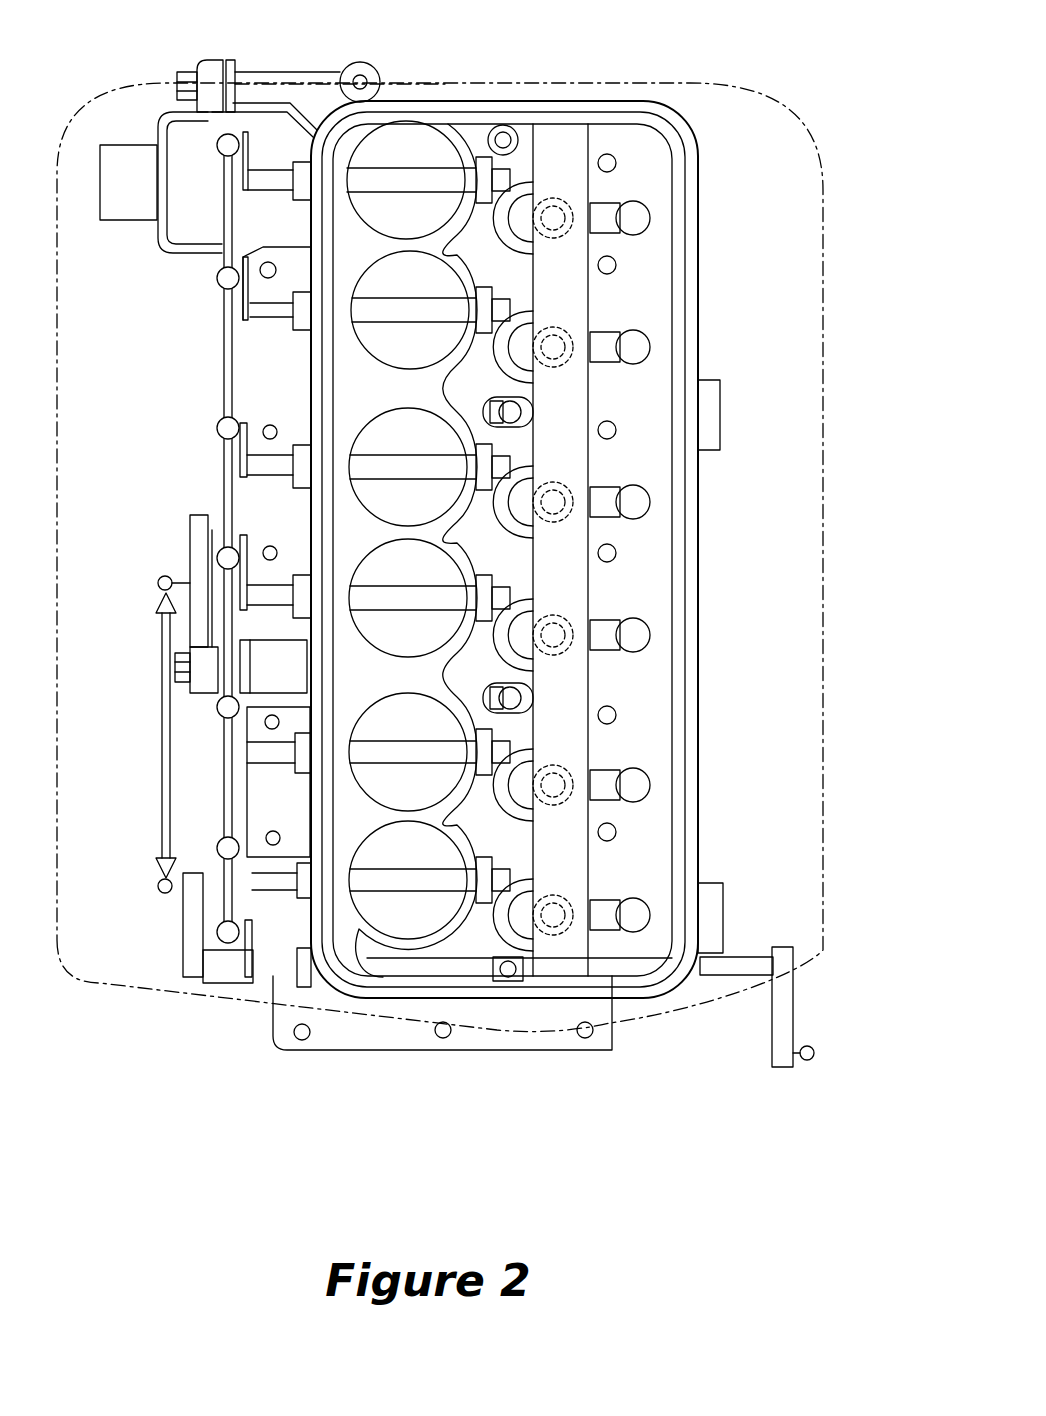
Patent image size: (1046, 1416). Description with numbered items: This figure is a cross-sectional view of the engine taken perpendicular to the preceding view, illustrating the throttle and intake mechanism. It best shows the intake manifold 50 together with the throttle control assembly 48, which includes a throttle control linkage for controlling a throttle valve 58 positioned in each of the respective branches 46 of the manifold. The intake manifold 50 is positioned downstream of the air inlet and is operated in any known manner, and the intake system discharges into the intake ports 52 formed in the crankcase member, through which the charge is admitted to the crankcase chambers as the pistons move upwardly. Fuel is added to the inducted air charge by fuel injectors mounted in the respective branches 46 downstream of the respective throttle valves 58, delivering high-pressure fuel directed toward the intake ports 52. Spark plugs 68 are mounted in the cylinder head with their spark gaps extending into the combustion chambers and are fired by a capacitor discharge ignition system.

The branches 46 is at (442, 152).
The throttle control assembly 48 is at (157, 540).
The intake manifold 50 is at (708, 201).
The intake ports 52 is at (438, 288).
The throttle valve 58 is at (428, 150).
The spark plugs 68 is at (522, 190).